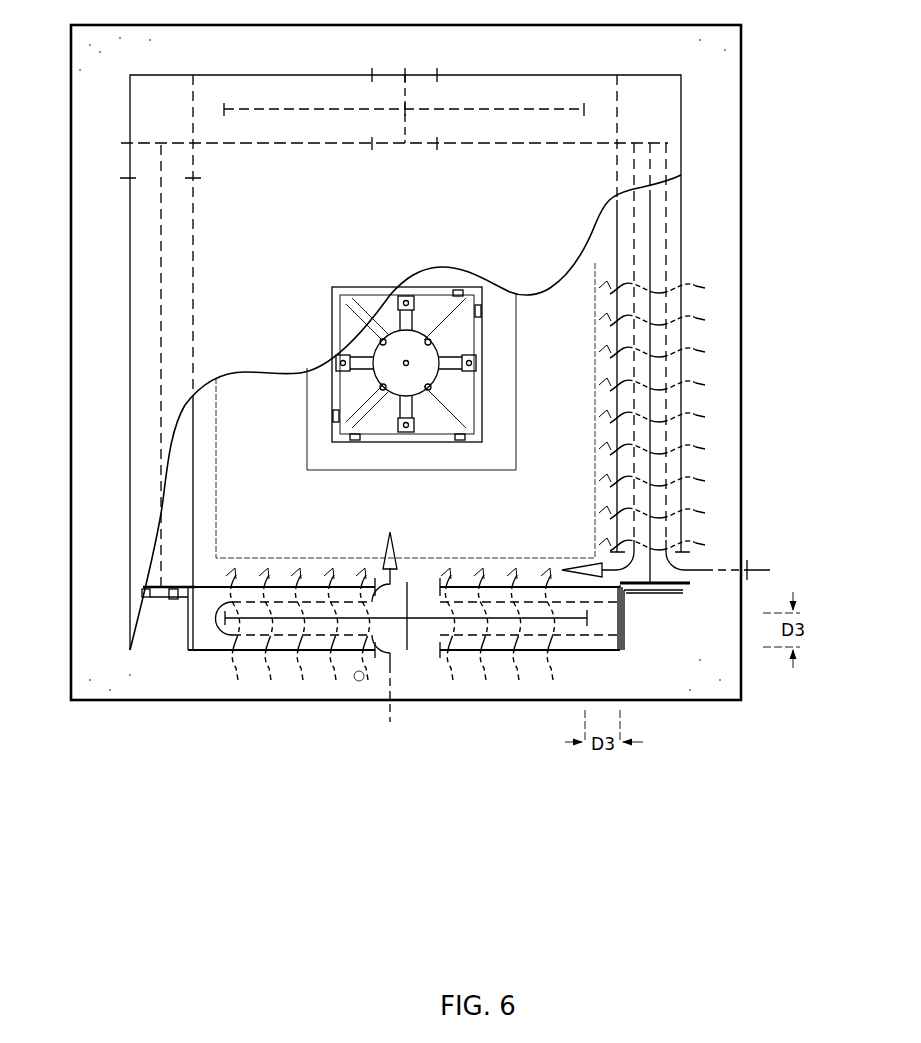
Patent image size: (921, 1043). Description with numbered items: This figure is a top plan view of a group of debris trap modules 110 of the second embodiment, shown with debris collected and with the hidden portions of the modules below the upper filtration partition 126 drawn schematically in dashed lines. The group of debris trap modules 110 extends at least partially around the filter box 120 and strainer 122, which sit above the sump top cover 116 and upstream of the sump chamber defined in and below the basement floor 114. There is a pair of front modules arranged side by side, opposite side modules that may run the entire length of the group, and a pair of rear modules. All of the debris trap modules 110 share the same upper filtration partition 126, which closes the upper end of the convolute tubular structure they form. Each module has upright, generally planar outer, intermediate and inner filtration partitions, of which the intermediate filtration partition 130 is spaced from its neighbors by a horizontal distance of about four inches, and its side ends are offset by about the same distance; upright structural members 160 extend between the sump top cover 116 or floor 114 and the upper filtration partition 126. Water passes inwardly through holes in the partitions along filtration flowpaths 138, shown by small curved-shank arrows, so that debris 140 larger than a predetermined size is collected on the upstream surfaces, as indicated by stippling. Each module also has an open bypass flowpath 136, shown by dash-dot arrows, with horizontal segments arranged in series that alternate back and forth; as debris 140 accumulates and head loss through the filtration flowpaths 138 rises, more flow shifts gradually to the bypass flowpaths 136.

The debris trap module 110 is at (707, 188).
The basement floor 114 is at (689, 58).
The sump top cover 116 is at (250, 526).
The filter box 120 is at (300, 397).
The strainer 122 is at (431, 284).
The upper filtration partition 126 is at (516, 240).
The intermediate filtration partition 130 is at (652, 256).
The bypass flowpath 136 is at (762, 561).
The filtration flowpath 138 is at (718, 386).
The debris 140 is at (697, 335).
The structural member 160 is at (702, 544).